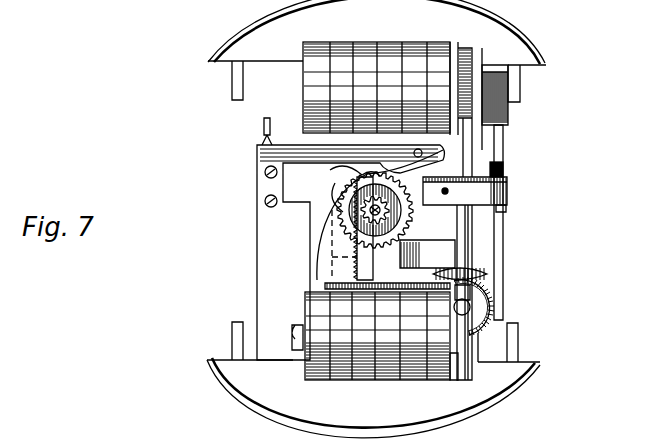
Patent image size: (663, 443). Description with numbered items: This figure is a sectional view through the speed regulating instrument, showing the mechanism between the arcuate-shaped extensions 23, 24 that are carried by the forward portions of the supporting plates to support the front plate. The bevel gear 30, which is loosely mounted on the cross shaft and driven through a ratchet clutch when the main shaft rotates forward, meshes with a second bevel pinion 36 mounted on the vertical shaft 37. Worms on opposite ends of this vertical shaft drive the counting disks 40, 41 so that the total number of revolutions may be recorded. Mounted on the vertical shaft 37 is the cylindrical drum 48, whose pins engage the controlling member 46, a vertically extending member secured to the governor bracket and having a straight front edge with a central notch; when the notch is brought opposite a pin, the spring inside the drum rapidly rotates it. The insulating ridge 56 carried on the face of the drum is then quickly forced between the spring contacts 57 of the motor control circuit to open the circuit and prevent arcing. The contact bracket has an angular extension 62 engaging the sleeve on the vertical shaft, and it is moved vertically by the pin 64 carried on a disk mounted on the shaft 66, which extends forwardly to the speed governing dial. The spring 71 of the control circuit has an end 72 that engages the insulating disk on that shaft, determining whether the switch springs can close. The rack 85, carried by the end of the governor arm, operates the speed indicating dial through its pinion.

The arcuate-shaped extension 23 is at (250, 398).
The arcuate-shaped extension 24 is at (254, 26).
The bevel gear 30 is at (494, 300).
The second bevel pinion 36 is at (488, 275).
The vertical shaft 37 is at (457, 230).
The counting disk 40 is at (383, 372).
The counting disk 41 is at (303, 84).
The controlling member 46 is at (504, 229).
The cylindrical drum 48 is at (508, 196).
The insulating ridge 56 is at (504, 172).
The spring contacts 57 is at (505, 135).
The angular extension 62 is at (506, 210).
The pin 64 is at (400, 213).
The shaft 66 is at (350, 206).
The spring 71 is at (258, 146).
The end of spring 72 is at (330, 172).
The rack 85 is at (318, 262).